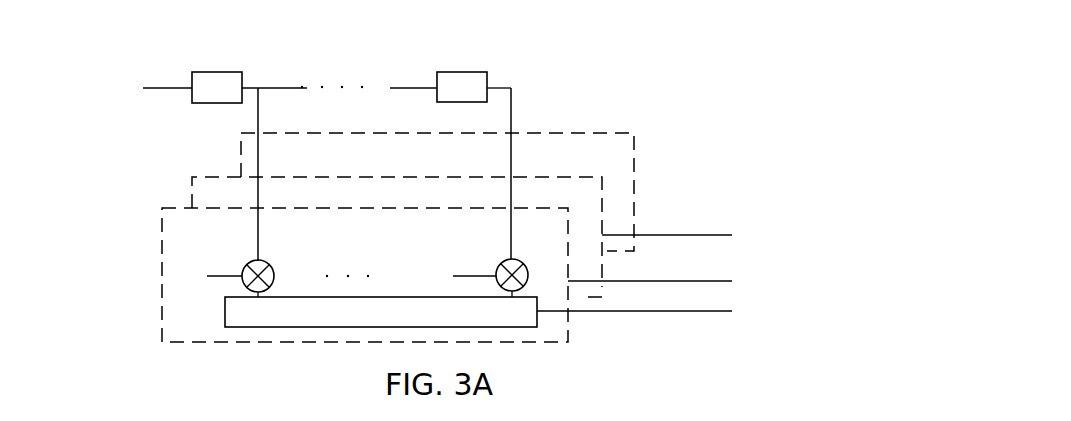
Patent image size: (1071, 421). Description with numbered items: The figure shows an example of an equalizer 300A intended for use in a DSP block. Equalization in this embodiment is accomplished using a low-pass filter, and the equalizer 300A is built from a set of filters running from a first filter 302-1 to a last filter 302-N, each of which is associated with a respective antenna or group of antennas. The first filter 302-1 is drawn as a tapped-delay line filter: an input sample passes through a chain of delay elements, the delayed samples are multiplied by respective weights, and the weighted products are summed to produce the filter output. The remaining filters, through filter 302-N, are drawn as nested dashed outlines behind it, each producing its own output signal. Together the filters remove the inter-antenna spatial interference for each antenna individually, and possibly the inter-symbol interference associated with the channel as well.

The equalizer 300A is at (146, 45).
The filter 302-N is at (597, 130).
The filter 302-1 is at (412, 255).